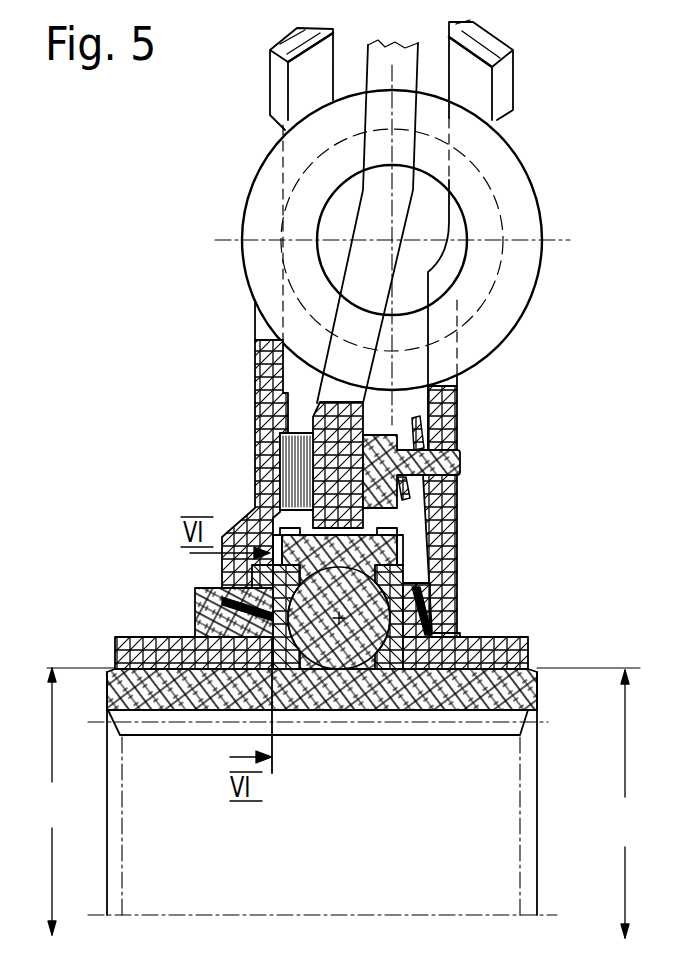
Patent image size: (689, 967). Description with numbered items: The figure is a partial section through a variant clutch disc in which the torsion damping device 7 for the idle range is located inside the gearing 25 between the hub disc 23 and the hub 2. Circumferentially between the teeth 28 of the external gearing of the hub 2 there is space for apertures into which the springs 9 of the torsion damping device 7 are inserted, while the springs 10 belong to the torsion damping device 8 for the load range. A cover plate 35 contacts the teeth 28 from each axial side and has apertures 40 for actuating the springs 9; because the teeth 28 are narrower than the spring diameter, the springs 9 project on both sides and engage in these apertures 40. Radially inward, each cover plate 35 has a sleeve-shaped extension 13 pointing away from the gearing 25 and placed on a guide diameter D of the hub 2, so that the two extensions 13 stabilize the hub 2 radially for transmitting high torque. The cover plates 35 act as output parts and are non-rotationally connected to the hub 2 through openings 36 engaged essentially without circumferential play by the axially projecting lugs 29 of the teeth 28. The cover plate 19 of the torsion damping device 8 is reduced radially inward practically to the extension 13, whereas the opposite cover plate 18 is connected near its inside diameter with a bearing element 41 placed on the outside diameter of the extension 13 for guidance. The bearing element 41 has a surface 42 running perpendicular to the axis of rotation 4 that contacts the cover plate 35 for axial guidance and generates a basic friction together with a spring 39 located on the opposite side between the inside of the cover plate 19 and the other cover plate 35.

The hub 2 is at (517, 700).
The axis of rotation 4 is at (297, 916).
The torsion damping device 7 is at (472, 597).
The torsion damping device 8 is at (565, 273).
The springs 9 is at (392, 650).
The springs 10 is at (268, 170).
The sleeve-shaped extension 13 is at (125, 652).
The cover plate 18 is at (255, 350).
The cover plate 19 is at (438, 405).
The hub disc 23 is at (383, 62).
The gearing 25 is at (370, 518).
The teeth 28 is at (402, 580).
The lugs 29 is at (270, 540).
The cover plate 35 is at (262, 583).
The openings 36 is at (272, 563).
The spring 39 is at (513, 660).
The apertures 40 is at (207, 607).
The bearing element 41 is at (287, 643).
The surface 42 is at (292, 650).
The guide diameter D is at (341, 803).